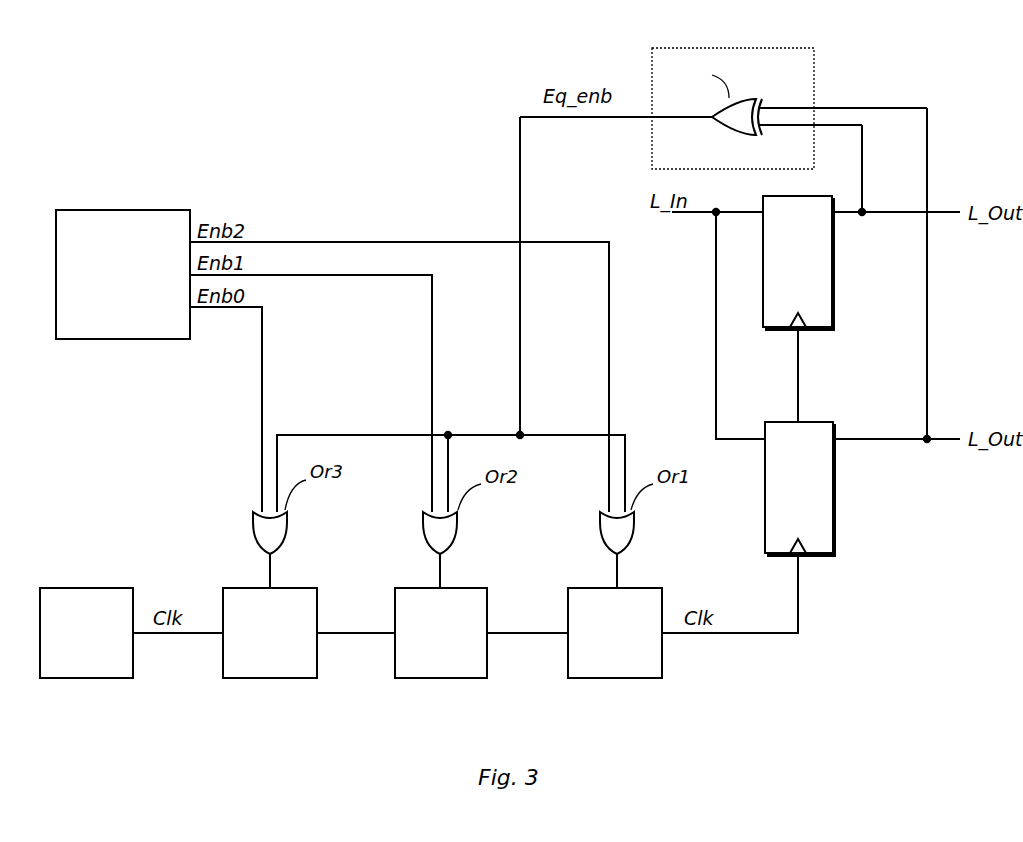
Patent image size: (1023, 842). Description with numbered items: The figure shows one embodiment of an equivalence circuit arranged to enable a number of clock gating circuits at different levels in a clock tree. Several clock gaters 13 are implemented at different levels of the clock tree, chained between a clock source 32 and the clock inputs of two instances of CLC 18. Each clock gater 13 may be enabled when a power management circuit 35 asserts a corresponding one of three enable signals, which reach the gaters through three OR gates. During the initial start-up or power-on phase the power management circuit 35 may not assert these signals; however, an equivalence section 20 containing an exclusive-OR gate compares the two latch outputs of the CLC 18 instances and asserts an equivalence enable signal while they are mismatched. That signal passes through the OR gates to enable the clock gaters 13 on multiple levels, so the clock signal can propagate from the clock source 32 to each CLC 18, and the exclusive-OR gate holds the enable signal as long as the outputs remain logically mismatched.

The latch circuit with XOR1 20 is at (806, 48).
The power management circuit 35 is at (123, 274).
The clock source 32 is at (86, 633).
The clock gater 13 is at (442, 633).
The CLC 18 is at (798, 375).